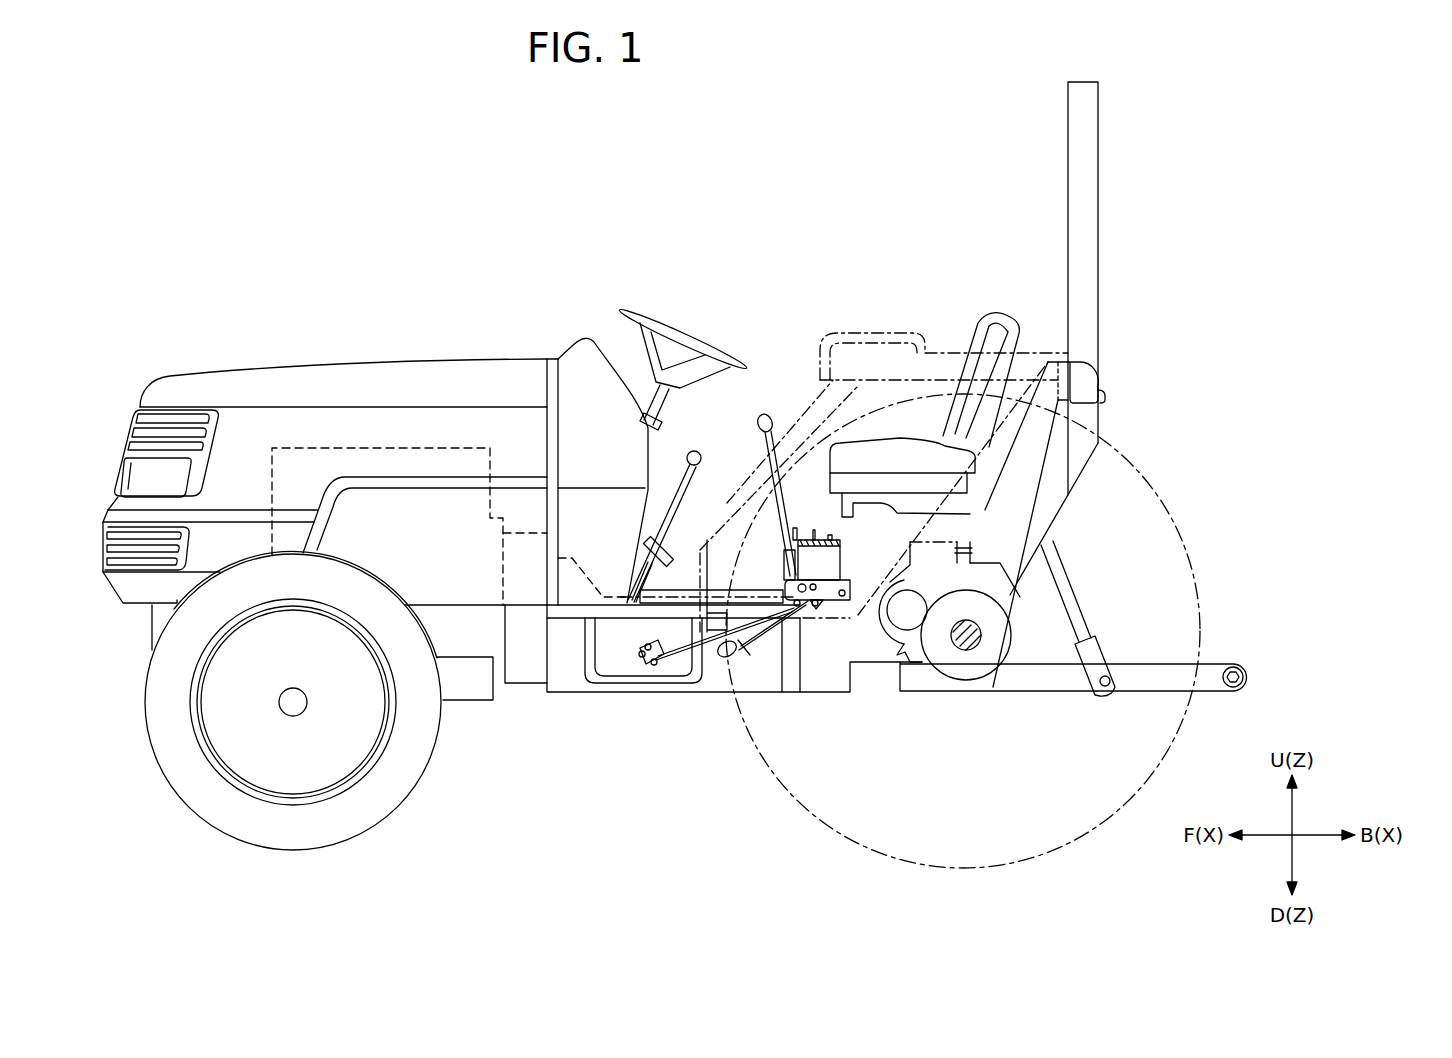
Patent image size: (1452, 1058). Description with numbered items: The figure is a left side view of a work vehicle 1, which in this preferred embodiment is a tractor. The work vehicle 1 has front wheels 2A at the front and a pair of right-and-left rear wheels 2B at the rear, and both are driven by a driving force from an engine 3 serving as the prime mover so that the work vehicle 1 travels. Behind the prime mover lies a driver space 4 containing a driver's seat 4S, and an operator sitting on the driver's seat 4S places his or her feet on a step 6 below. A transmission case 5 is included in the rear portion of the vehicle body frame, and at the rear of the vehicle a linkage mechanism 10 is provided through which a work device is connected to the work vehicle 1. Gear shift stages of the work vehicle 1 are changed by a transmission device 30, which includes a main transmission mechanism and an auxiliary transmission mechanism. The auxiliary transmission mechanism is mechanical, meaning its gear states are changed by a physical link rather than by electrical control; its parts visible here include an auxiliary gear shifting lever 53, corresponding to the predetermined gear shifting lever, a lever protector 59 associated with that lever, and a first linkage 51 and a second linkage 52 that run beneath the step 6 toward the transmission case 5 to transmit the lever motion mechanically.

The work vehicle 1 is at (604, 391).
The front wheel 2A is at (186, 788).
The rear wheels 2B is at (796, 797).
The engine 3 is at (340, 448).
The driver space 4 is at (779, 294).
The driver's seat 4S is at (977, 338).
The transmission case 5 is at (722, 683).
The step 6 is at (678, 612).
The linkage mechanism 10 is at (1086, 578).
The transmission device 30 is at (805, 490).
The first linkage 51 is at (673, 663).
The second linkage 52 is at (758, 650).
The auxiliary gear shifting lever 53 is at (758, 440).
The lever protector 59 is at (780, 562).